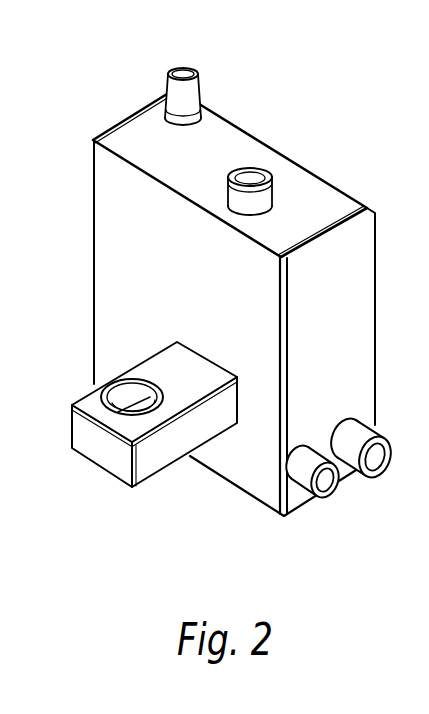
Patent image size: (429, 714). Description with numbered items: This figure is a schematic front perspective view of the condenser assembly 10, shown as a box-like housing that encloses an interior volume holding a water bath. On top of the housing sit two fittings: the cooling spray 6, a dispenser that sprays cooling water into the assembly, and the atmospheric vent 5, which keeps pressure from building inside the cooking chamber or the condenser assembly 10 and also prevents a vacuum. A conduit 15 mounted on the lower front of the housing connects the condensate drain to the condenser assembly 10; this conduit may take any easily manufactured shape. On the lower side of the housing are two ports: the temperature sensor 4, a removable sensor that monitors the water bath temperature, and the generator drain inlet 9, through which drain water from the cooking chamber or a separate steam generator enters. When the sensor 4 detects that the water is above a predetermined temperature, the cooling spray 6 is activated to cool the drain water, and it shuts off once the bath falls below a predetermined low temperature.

The condenser assembly 10 is at (333, 156).
The cooling spray 6 is at (183, 71).
The atmospheric vent 5 is at (250, 168).
The conduit 15 is at (108, 450).
The temperature sensor 4 is at (328, 500).
The generator drain inlet 9 is at (392, 461).